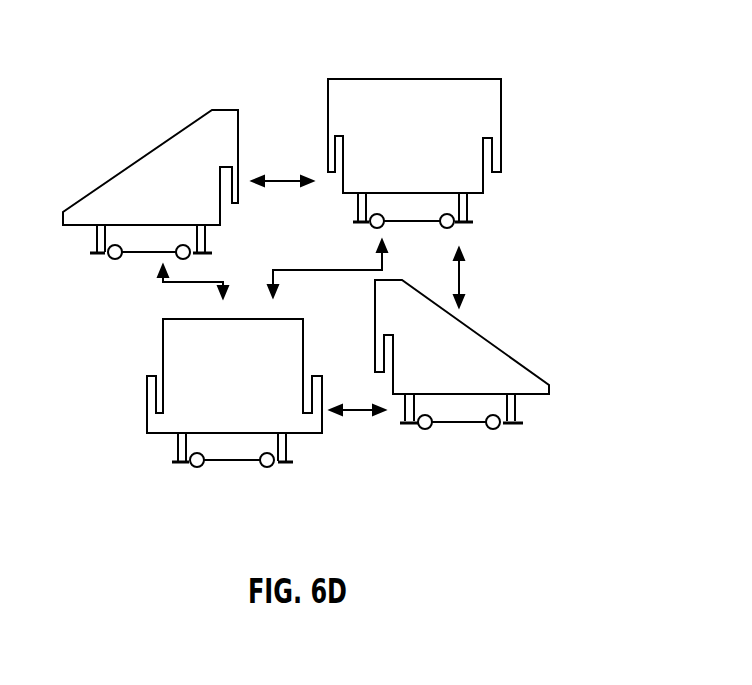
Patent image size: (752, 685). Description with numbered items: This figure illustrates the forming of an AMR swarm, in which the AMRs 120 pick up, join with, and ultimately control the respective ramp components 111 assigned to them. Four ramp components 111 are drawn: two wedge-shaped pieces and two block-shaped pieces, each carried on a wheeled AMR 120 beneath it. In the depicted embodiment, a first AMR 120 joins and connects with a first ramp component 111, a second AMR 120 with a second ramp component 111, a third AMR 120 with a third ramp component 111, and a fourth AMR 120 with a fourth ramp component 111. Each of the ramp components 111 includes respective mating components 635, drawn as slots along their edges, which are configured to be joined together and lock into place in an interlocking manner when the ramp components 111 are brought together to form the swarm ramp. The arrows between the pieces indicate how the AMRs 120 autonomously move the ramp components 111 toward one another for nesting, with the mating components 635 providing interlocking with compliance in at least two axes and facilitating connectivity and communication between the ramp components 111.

The ramp component 111 is at (119, 180).
The mating component 635 is at (232, 203).
The AMR 120 is at (135, 252).